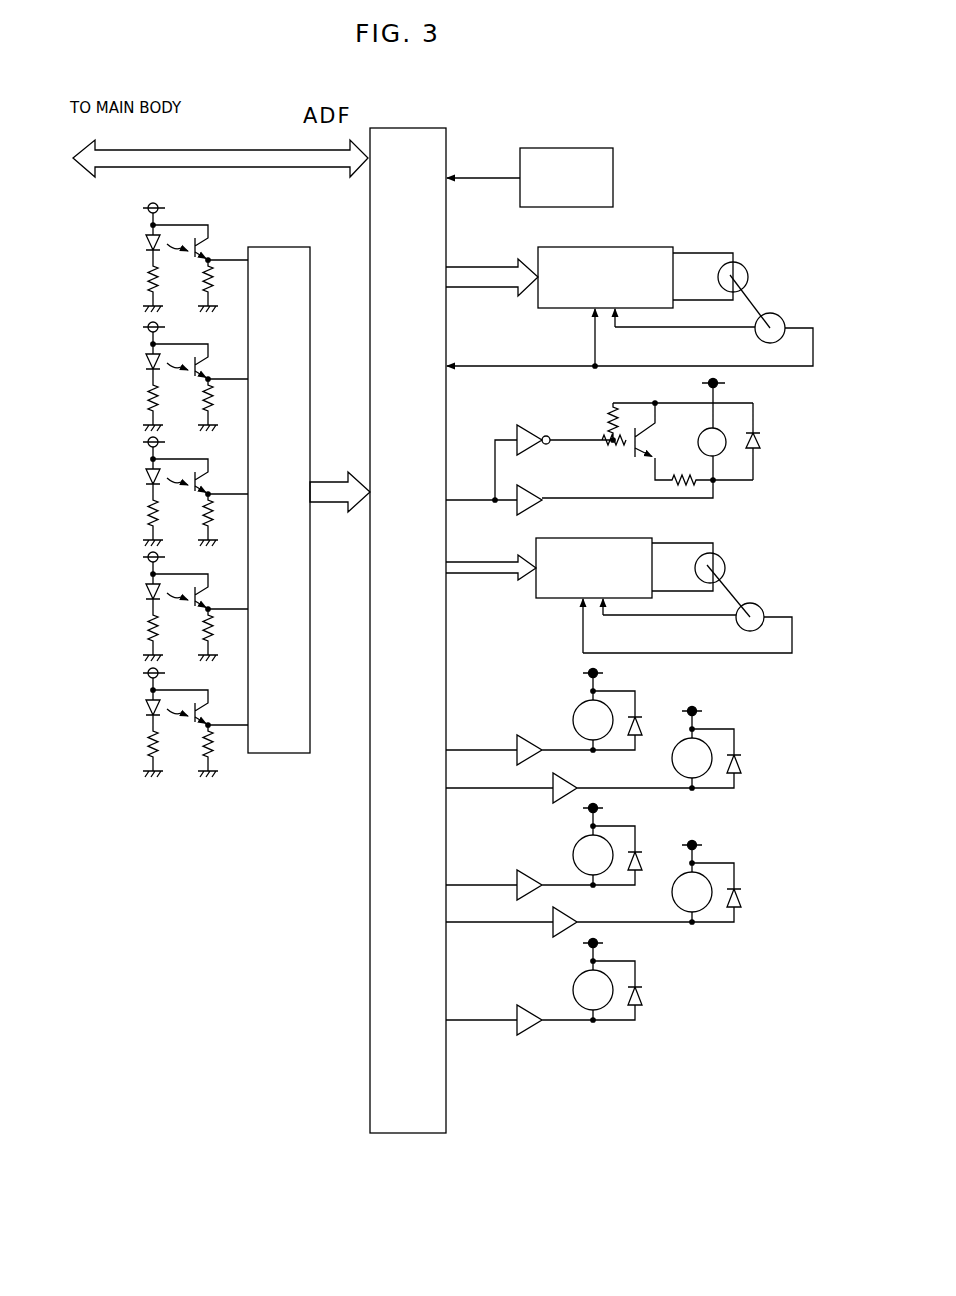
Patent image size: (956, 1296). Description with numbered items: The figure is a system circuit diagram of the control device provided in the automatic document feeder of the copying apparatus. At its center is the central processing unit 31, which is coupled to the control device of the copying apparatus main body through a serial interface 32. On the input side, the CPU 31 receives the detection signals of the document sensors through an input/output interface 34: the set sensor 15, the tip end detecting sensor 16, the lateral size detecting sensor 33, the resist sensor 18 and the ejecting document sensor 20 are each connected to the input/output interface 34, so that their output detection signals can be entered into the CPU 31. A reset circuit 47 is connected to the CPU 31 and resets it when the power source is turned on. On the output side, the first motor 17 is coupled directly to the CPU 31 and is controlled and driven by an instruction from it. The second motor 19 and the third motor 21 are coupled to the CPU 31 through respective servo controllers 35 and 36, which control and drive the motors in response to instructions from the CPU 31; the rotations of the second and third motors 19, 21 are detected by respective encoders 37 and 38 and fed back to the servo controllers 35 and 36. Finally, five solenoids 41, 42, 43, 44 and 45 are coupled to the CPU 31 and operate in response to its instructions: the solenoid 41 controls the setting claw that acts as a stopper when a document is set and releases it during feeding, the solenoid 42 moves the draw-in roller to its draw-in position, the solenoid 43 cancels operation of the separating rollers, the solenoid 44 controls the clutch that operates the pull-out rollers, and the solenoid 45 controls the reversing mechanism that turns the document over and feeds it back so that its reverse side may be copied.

The set sensor 15 is at (137, 234).
The tip end detecting sensor 16 is at (138, 351).
The first motor 17 is at (718, 432).
The resist sensor 18 is at (132, 571).
The second motor 19 is at (747, 268).
The ejecting document sensor 20 is at (131, 687).
The third motor 21 is at (718, 555).
The central processing unit 31 is at (427, 127).
The serial interface 32 is at (307, 167).
The lateral size detecting sensor 33 is at (138, 459).
The input/output interface 34 is at (312, 258).
The servo controller 35 is at (660, 247).
The servo controller 36 is at (652, 539).
The encoder 37 is at (784, 319).
The encoder 38 is at (761, 606).
The solenoid 41 is at (576, 705).
The solenoid 42 is at (672, 759).
The solenoid 43 is at (573, 851).
The solenoid 44 is at (671, 897).
The solenoid 45 is at (570, 988).
The reset circuit 47 is at (615, 157).